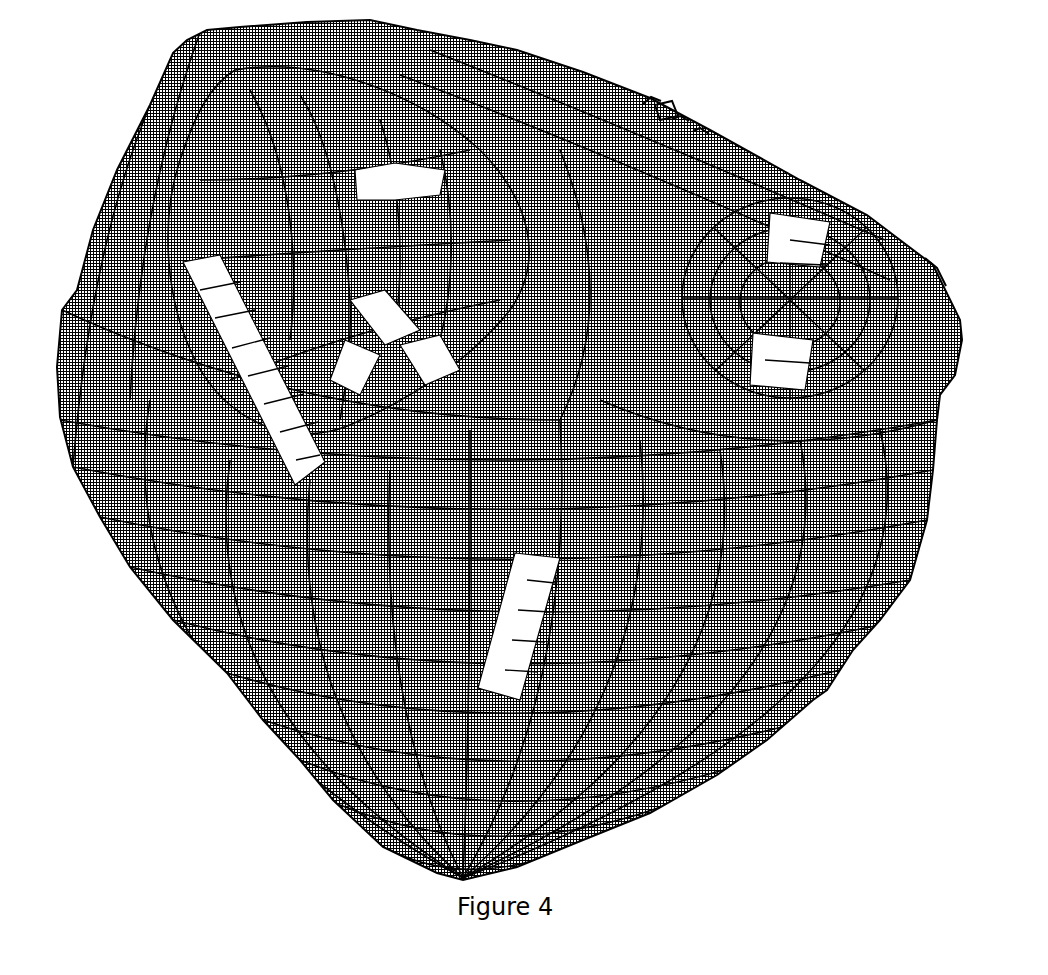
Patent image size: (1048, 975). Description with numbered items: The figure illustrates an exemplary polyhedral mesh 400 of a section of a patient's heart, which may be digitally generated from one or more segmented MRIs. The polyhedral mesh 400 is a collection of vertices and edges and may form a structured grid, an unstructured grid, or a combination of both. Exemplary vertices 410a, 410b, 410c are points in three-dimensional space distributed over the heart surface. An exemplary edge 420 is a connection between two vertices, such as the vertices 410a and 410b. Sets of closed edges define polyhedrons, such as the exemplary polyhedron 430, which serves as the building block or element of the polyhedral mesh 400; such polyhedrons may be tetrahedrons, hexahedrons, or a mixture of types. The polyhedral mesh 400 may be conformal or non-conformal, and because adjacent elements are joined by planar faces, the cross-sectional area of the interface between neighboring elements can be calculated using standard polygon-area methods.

The polyhedral mesh 400 is at (860, 137).
The vertex 410a is at (651, 97).
The vertex 410b is at (680, 116).
The vertex 410c is at (700, 128).
The edge 420 is at (661, 107).
The polyhedron 430 is at (937, 268).